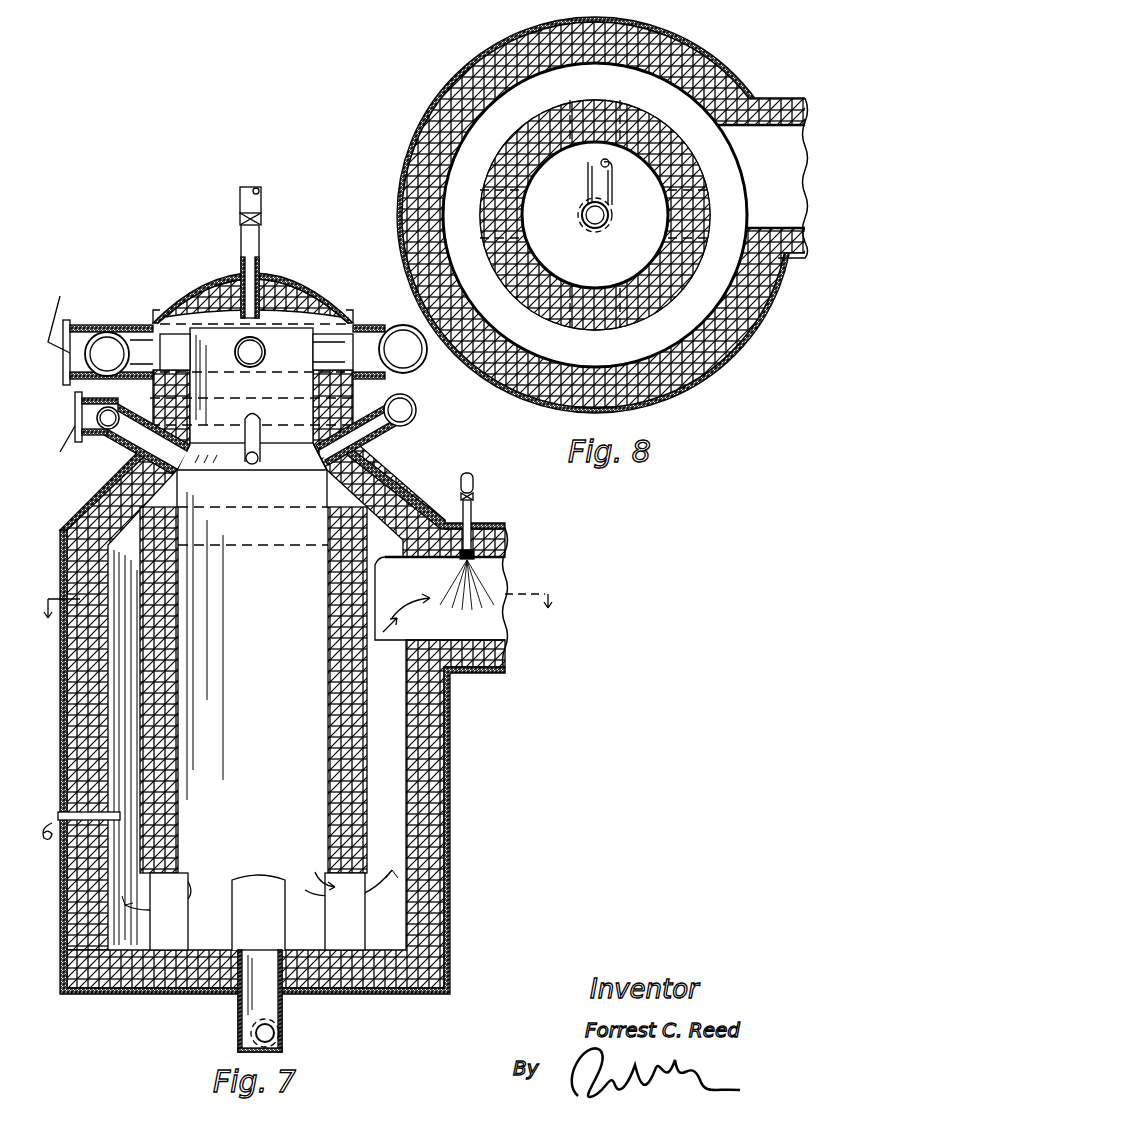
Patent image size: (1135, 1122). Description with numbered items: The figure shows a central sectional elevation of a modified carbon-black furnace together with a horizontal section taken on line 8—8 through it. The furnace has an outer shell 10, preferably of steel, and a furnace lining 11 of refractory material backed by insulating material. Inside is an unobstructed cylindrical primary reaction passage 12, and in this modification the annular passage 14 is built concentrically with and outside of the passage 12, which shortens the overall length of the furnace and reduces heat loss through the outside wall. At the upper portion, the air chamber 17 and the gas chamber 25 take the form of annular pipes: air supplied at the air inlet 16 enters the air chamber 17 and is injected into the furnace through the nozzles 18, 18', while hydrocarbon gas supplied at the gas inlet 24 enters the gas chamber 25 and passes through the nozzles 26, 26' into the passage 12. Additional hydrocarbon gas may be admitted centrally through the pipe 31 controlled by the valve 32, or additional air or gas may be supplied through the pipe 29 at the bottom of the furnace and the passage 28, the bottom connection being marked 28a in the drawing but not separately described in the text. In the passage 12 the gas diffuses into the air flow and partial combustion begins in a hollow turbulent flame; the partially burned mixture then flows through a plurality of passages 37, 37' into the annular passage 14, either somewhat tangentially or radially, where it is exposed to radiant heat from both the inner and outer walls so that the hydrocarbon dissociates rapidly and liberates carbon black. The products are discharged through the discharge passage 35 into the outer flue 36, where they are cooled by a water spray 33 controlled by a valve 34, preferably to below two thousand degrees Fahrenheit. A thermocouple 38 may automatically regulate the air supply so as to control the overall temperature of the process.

In FIG. 7, the section line 8— 8 is at (300, 595).
In FIG. 7, the outer shell 10 is at (70, 792).
In FIG. 7, the furnace lining 11 is at (90, 757).
In FIG. 7, the unobstructed cylindrical passage 12 is at (302, 525).
In FIG. 8, the unobstructed cylindrical passage 12 is at (568, 168).
In FIG. 7, the annular passage 14 is at (392, 797).
In FIG. 8, the annular passage 14 is at (470, 183).
In FIG. 7, the air inlet 16 is at (75, 358).
In FIG. 7, the air chamber 17 is at (412, 358).
In FIG. 7, the air nozzle 18 is at (271, 349).
In FIG. 7, the air nozzle 18' is at (312, 362).
In FIG. 7, the gas inlet 24 is at (90, 418).
In FIG. 7, the gas chamber 25 is at (410, 420).
In FIG. 7, the gas nozzle 26 is at (239, 458).
In FIG. 7, the gas nozzle 26' is at (305, 471).
In FIG. 8, the passage 28 is at (592, 221).
In FIG. 7, the drain pipe 28a is at (260, 992).
In FIG. 7, the supply pipe 29 is at (245, 1038).
In FIG. 8, the supply pipe 29 is at (588, 186).
In FIG. 7, the gas supply pipe 31 is at (262, 247).
In FIG. 7, the valve 32 is at (257, 220).
In FIG. 7, the water spray 33 is at (480, 561).
In FIG. 7, the valve 34 is at (476, 498).
In FIG. 7, the discharge passage 35 is at (400, 628).
In FIG. 7, the outer flue 36 is at (478, 632).
In FIG. 8, the outer flue 36 is at (768, 165).
In FIG. 7, the connecting passage 37 is at (217, 891).
In FIG. 7, the connecting passage 37' is at (327, 901).
In FIG. 7, the thermocouple 38 is at (76, 837).